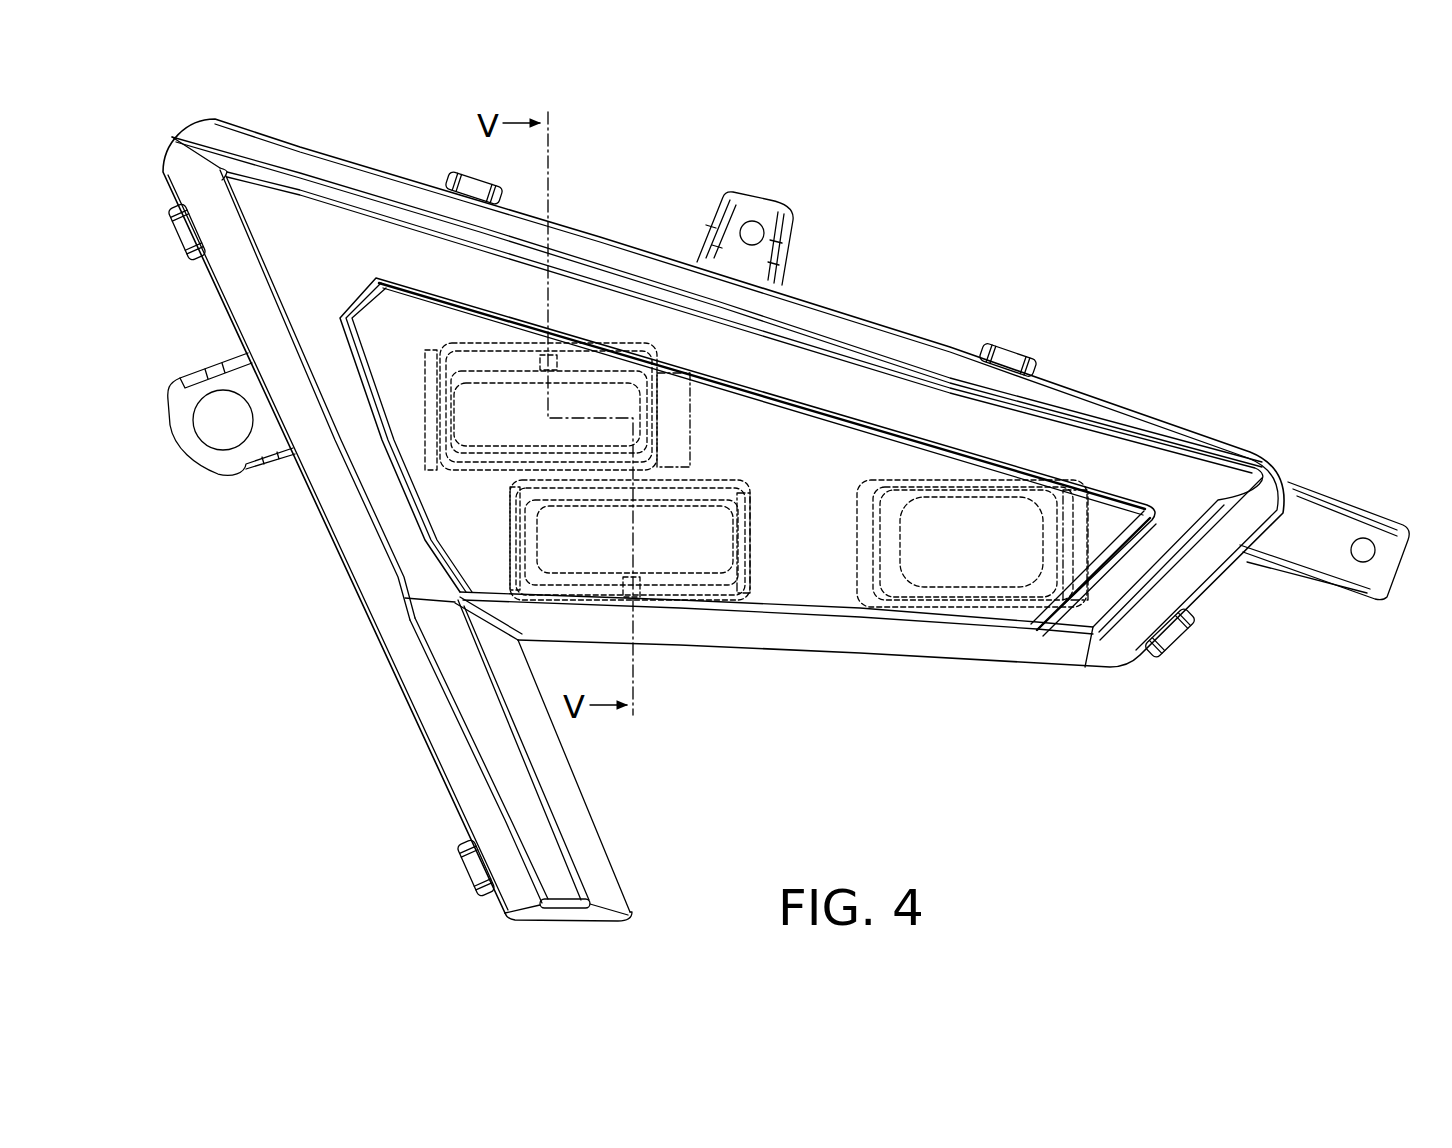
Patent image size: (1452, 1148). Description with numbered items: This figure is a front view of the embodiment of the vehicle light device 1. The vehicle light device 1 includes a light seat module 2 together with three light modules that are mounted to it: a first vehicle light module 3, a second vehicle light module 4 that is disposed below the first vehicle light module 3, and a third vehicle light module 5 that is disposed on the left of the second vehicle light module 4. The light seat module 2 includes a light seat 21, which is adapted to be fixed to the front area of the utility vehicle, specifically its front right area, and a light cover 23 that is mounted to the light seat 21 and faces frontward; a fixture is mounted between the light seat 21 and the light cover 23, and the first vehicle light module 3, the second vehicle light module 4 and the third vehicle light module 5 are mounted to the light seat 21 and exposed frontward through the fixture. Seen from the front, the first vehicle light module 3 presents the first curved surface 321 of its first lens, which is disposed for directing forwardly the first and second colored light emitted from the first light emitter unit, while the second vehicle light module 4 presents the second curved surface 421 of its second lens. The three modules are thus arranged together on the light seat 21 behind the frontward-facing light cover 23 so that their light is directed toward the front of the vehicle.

The vehicle light device 1 is at (1215, 125).
The light seat module 2 is at (1063, 282).
The light seat 21 is at (1333, 493).
The light cover 23 is at (415, 717).
The first vehicle light module 3 is at (452, 333).
The first curved surface 321 is at (605, 397).
The second vehicle light module 4 is at (764, 568).
The second curved surface 421 is at (560, 534).
The third vehicle light module 5 is at (985, 607).